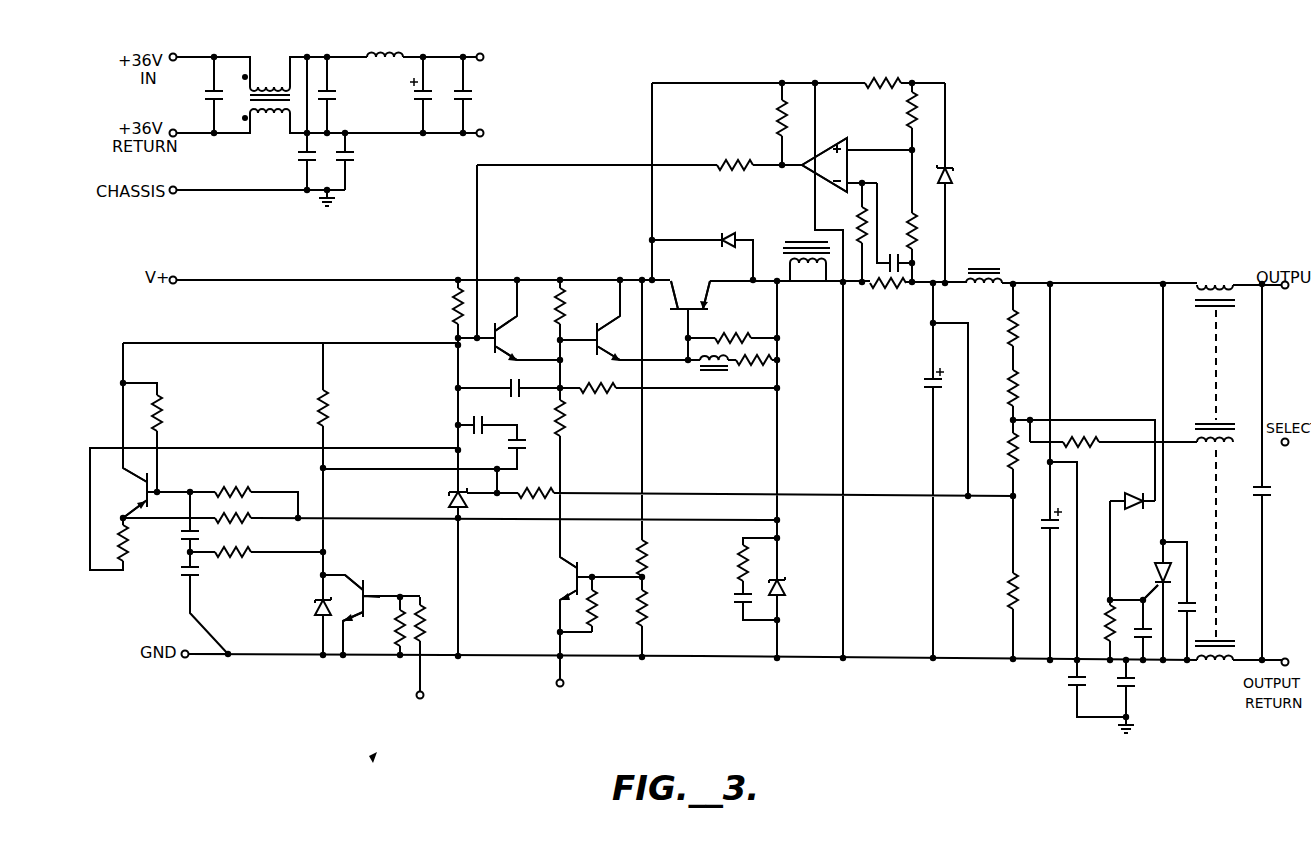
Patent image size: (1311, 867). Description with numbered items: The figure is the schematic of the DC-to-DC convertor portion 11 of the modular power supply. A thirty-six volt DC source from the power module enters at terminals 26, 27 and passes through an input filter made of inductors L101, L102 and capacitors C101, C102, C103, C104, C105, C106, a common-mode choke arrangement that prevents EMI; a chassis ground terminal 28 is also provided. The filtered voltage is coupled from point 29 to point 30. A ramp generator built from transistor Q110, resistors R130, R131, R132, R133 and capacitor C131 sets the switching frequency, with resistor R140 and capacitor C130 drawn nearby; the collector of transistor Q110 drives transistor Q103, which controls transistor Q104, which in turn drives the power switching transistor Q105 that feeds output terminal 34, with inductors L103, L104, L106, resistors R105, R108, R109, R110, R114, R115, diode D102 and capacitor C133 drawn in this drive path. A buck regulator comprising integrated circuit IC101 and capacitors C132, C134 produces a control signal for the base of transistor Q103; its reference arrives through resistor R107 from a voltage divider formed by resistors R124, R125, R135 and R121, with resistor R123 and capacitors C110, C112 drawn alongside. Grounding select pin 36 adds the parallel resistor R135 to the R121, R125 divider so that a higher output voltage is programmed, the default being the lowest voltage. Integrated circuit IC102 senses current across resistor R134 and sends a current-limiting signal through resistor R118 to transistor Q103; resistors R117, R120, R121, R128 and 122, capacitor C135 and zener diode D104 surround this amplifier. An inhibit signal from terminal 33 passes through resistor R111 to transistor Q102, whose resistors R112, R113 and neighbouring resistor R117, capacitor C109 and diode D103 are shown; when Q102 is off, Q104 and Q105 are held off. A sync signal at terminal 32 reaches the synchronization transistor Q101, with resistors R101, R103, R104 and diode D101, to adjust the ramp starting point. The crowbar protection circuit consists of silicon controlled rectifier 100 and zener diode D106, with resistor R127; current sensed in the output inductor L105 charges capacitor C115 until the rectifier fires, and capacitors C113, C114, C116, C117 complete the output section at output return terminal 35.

The DC-to-DC convertor portion 11 is at (375, 755).
The input terminal 26 is at (177, 56).
The input terminal 27 is at (177, 132).
The chassis ground terminal 28 is at (177, 189).
The point 29 is at (491, 121).
The point 30 is at (193, 670).
The terminal 32 is at (424, 695).
The terminal 33 is at (564, 685).
The output terminal 34 is at (1280, 290).
The output return terminal 35 is at (1276, 644).
The select pin 36 is at (1282, 446).
The silicon controlled rectifier 100 is at (1157, 567).
The resistor 122 is at (912, 235).
The capacitor C101 is at (206, 95).
The capacitor C102 is at (336, 87).
The capacitor C103 is at (303, 154).
The capacitor C104 is at (354, 162).
The capacitor C105 is at (418, 97).
The capacitor C106 is at (473, 95).
The capacitor C109 is at (733, 597).
The capacitor C110 is at (925, 385).
The capacitor C112 is at (1040, 523).
The capacitor C113 is at (1068, 680).
The capacitor C114 is at (1133, 690).
The capacitor C115 is at (1138, 645).
The capacitor C116 is at (1200, 608).
The capacitor C117 is at (1265, 495).
The capacitor C130 is at (188, 580).
The capacitor C131 is at (182, 535).
The capacitor C132 is at (515, 447).
The capacitor C133 is at (512, 372).
The capacitor C134 is at (475, 412).
The capacitor C135 is at (898, 252).
The inductor L101 is at (258, 75).
The inductor L102 is at (392, 55).
The transformer L103 is at (798, 242).
The inductor L104 is at (986, 268).
The inductor L105 is at (1206, 478).
The inductor L106 is at (693, 367).
The zener diode D101 is at (315, 606).
The diode D102 is at (725, 235).
The zener diode D103 is at (785, 585).
The zener diode D104 is at (948, 164).
The zener diode D106 is at (1145, 494).
The transistor Q101 is at (353, 580).
The transistor Q102 is at (570, 577).
The transistor Q103 is at (507, 340).
The transistor Q104 is at (610, 345).
The power switching transistor Q105 is at (690, 293).
The transistor Q110 is at (137, 490).
The integrated circuit IC101 is at (447, 493).
The integrated circuit IC102 is at (847, 163).
The resistor R101 is at (320, 418).
The resistor R103 is at (396, 622).
The resistor R104 is at (428, 604).
The resistor R105 is at (452, 302).
The resistor R107 is at (518, 477).
The resistor R108 is at (562, 296).
The resistor R109 is at (566, 420).
The resistor R110 is at (605, 379).
The resistor R111 is at (594, 597).
The resistor R112 is at (644, 548).
The resistor R113 is at (644, 620).
The resistor R114 is at (718, 320).
The resistor R115 is at (760, 375).
The resistor R117 is at (742, 562).
The resistor R118 is at (741, 154).
The resistor R120 is at (865, 78).
The resistor R121 is at (1010, 585).
The resistor R123 is at (1009, 320).
The resistor R124 is at (1007, 397).
The resistor R125 is at (1007, 459).
The resistor R127 is at (1112, 604).
The resistor R128 is at (858, 218).
The resistor R130 is at (237, 478).
The resistor R131 is at (248, 513).
The resistor R132 is at (248, 547).
The resistor R133 is at (125, 557).
The resistor R134 is at (866, 292).
The resistor R135 is at (1080, 448).
The resistor R140 is at (162, 404).